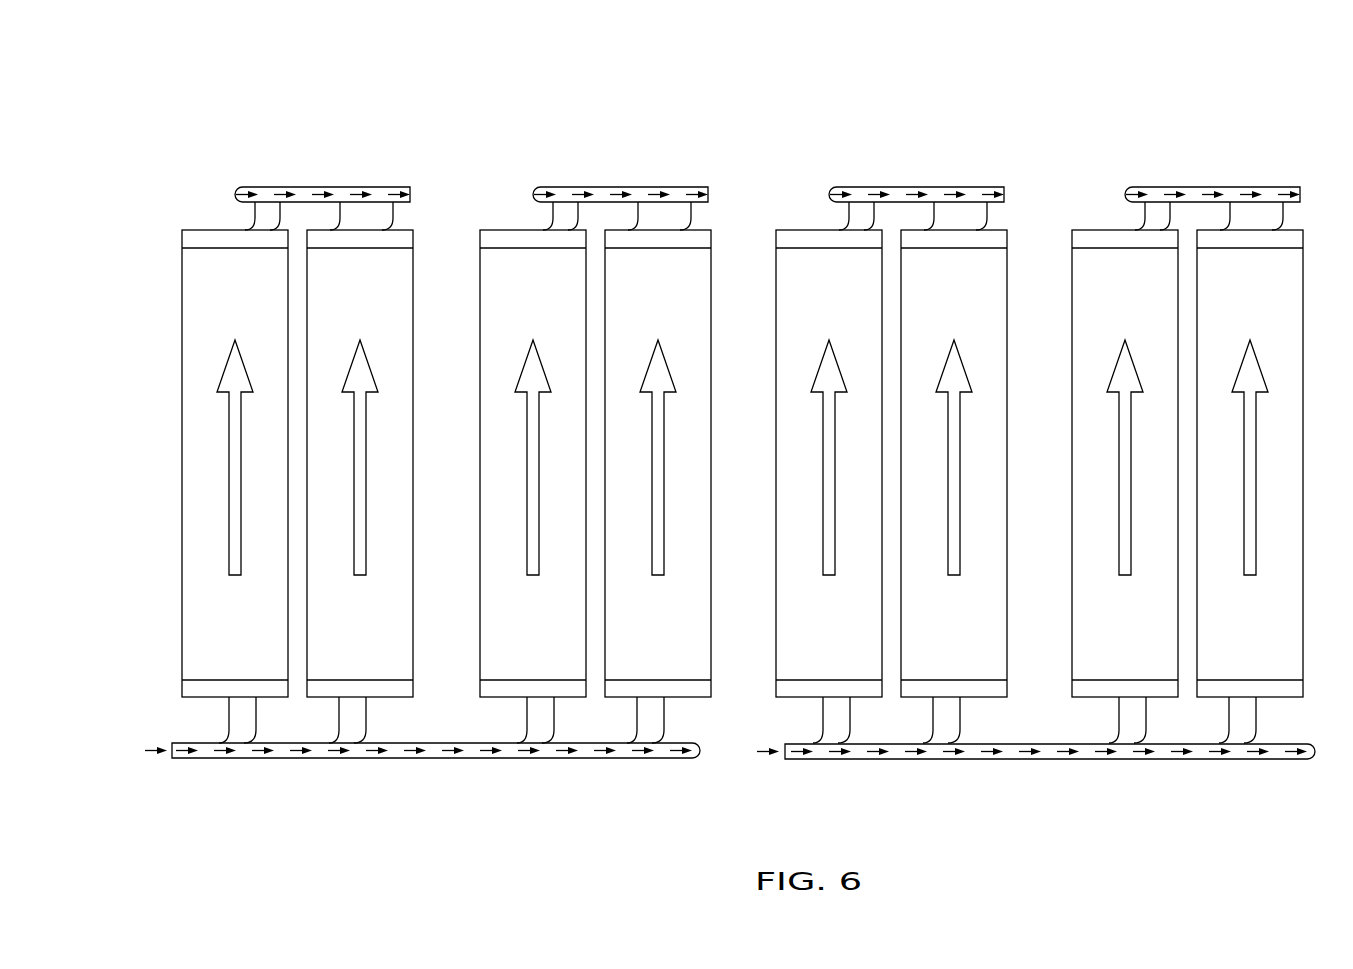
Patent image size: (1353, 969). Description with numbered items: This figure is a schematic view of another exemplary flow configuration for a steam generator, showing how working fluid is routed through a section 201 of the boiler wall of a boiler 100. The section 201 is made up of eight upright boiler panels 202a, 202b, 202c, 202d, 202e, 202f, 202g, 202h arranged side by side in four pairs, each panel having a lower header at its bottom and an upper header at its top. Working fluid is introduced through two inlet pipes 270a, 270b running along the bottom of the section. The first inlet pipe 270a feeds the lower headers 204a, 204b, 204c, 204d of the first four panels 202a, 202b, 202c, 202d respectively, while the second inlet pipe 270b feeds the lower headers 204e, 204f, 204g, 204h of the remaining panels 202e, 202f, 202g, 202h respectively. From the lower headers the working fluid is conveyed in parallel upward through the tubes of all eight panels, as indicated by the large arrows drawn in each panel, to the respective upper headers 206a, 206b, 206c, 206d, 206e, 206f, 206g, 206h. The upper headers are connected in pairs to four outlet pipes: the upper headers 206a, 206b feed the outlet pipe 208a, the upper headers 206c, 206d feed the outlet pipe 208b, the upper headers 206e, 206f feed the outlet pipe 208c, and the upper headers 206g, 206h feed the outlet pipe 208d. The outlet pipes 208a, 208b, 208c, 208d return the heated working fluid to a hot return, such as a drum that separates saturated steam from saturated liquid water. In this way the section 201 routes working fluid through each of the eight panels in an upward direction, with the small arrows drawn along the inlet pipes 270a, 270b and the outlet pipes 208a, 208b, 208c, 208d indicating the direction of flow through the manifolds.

The boiler 100 is at (530, 85).
The section 201 is at (177, 487).
The panel 202a is at (235, 463).
The panel 202b is at (360, 463).
The panel 202c is at (533, 463).
The panel 202d is at (658, 463).
The panel 202e is at (829, 463).
The panel 202f is at (954, 463).
The panel 202g is at (1125, 463).
The panel 202h is at (1250, 463).
The lower header 204a is at (234, 686).
The lower header 204b is at (350, 686).
The lower header 204c is at (532, 686).
The lower header 204d is at (648, 686).
The lower header 204e is at (828, 686).
The lower header 204f is at (944, 686).
The lower header 204g is at (1124, 686).
The lower header 204h is at (1240, 686).
The upper header 206a is at (229, 209).
The upper header 206b is at (392, 208).
The upper header 206c is at (527, 209).
The upper header 206d is at (690, 208).
The upper header 206e is at (823, 209).
The upper header 206f is at (986, 208).
The upper header 206g is at (1119, 209).
The upper header 206h is at (1282, 208).
The outlet pipe 208a is at (322, 166).
The outlet pipe 208b is at (620, 166).
The outlet pipe 208c is at (916, 166).
The outlet pipe 208d is at (1212, 166).
The inlet pipe 270a is at (427, 758).
The inlet pipe 270b is at (1050, 759).